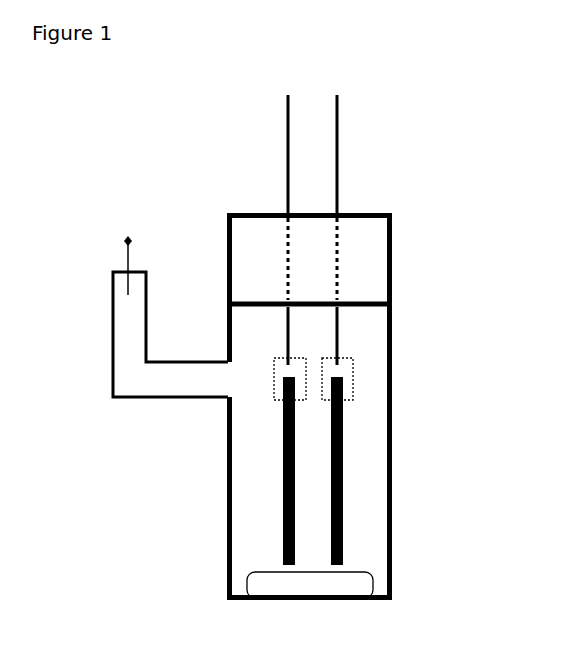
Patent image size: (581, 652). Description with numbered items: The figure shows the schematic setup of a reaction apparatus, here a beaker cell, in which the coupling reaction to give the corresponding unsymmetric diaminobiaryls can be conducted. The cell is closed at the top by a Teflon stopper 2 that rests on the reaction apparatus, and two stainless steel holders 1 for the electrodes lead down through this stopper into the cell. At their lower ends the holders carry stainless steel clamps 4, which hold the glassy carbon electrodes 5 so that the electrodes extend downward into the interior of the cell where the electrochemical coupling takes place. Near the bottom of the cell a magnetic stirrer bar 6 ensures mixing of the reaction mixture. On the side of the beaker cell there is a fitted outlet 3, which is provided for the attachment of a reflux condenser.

The stainless steel holders 1 is at (338, 142).
The Teflon stopper 2 is at (392, 260).
The fitted outlet 3 is at (110, 318).
The stainless steel clamps 4 is at (354, 380).
The glassy carbon electrodes 5 is at (344, 472).
The magnetic stirrer bar 6 is at (374, 585).